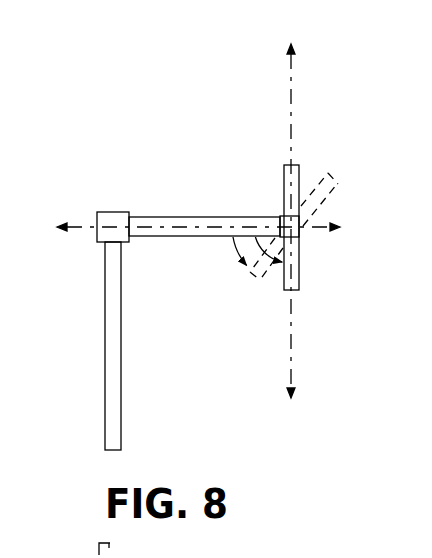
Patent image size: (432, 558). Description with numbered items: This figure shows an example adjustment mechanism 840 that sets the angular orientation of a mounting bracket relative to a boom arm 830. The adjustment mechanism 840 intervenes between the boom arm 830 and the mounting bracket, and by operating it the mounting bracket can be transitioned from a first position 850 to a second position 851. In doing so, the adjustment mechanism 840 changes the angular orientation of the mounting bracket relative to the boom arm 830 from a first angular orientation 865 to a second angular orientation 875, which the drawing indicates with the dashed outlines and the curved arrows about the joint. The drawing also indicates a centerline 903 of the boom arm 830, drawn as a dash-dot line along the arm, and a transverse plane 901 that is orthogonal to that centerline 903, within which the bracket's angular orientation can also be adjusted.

The boom arm 830 is at (164, 238).
The adjustment mechanism 840 is at (281, 219).
The first position 850 is at (303, 278).
The second position 851 is at (339, 190).
The first angular orientation 865 is at (259, 263).
The second angular orientation 875 is at (232, 250).
The transverse plane 901 is at (292, 117).
The centerline 903 is at (85, 223).